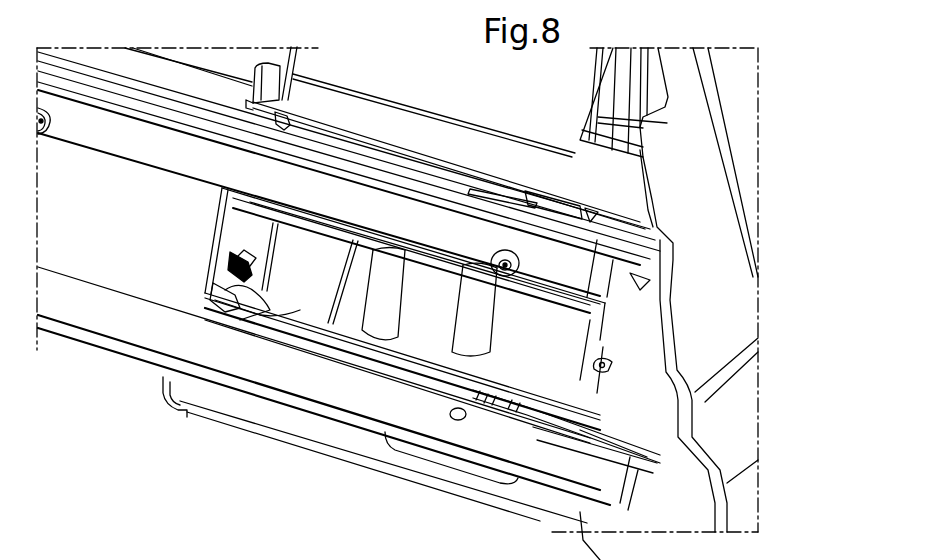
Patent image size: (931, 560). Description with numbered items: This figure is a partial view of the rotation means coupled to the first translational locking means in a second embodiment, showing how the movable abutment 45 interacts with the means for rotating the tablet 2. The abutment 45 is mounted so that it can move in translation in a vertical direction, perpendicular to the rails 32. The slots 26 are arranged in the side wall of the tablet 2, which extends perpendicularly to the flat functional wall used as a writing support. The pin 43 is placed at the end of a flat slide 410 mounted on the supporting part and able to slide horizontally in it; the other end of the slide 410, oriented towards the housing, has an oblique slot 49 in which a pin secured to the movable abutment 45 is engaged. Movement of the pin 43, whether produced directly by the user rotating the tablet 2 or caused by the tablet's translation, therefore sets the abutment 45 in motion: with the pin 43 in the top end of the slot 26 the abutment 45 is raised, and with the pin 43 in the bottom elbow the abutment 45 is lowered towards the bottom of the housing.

The tablet 2 is at (687, 140).
The slot 26 is at (600, 367).
The rail 32 is at (130, 330).
The pin 43 is at (608, 367).
The movable abutment 45 is at (213, 283).
The oblique slot 49 is at (225, 255).
The flat slide 410 is at (300, 290).